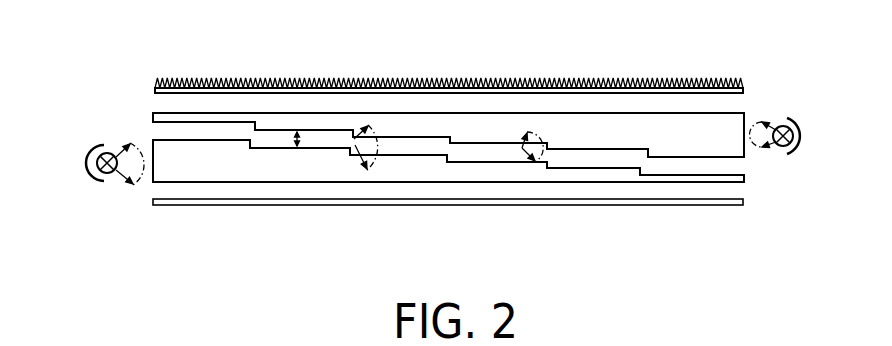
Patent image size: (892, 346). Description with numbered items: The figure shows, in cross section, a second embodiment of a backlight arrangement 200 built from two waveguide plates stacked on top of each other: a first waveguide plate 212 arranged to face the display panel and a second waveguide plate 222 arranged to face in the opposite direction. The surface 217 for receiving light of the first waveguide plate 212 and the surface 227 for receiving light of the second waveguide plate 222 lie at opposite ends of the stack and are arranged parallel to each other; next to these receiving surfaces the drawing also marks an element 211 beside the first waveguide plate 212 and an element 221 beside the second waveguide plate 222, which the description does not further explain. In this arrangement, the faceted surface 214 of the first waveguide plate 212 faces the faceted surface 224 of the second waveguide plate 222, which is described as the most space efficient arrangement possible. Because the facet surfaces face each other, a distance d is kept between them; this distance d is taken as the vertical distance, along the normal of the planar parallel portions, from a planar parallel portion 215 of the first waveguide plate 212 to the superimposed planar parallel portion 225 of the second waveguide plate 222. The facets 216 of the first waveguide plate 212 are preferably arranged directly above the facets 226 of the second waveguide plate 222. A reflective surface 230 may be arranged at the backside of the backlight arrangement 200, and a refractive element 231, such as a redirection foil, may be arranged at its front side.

The backlight arrangement 200 is at (754, 207).
The second rotation axis 211 is at (801, 136).
The first waveguide plate 212 is at (702, 147).
The faceted surface 214 is at (740, 158).
The planar parallel portion 215 is at (423, 137).
The facets 216 is at (647, 152).
The surface for receiving light 217 is at (745, 116).
The first rotation axis 221 is at (92, 163).
The second waveguide plate 222 is at (228, 174).
The faceted surface 224 is at (154, 113).
The planar parallel portion 225 is at (410, 153).
The facets 226 is at (643, 171).
The surface for receiving light 227 is at (152, 181).
The reflective surface 230 is at (184, 206).
The refractive element 231 is at (222, 78).
The distance d is at (298, 147).